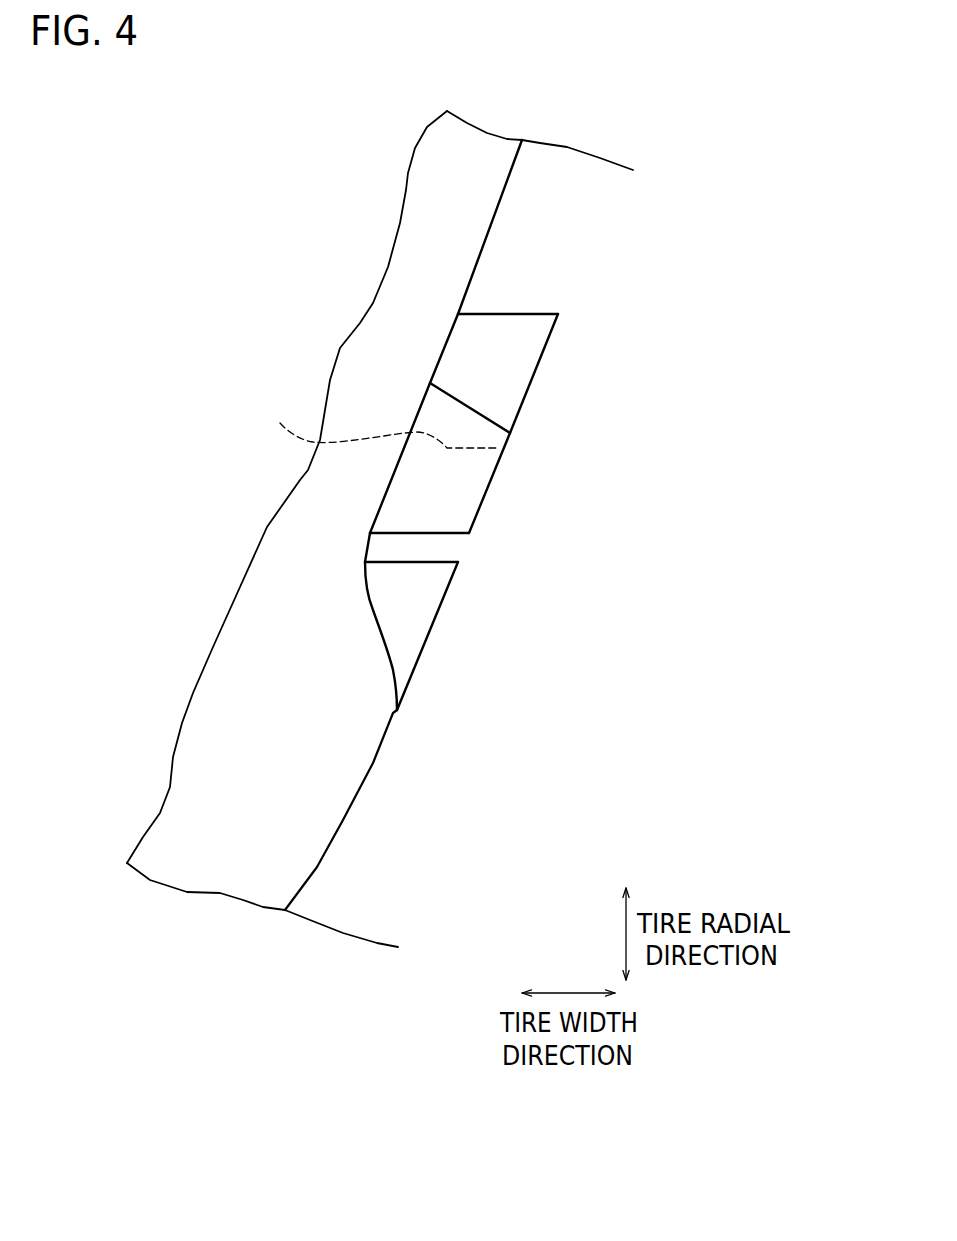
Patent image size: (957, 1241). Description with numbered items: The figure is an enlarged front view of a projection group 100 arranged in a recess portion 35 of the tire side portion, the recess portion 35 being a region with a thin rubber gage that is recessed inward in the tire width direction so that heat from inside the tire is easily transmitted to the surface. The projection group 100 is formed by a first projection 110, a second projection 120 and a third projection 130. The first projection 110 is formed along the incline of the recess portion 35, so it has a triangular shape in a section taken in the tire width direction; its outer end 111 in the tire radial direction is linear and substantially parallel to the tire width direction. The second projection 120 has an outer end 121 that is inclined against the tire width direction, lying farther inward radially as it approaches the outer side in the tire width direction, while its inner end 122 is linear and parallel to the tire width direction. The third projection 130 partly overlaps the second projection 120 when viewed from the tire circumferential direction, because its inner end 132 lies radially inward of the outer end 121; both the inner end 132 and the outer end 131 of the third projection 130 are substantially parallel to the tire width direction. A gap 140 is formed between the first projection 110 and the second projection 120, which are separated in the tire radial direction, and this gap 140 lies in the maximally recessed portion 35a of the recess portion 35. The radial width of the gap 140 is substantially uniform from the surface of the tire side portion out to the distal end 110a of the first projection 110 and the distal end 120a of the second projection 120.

The projection group 100 is at (602, 307).
The outer end 131 is at (500, 312).
The third projection 130 is at (508, 370).
The outer end 121 is at (488, 420).
The inner end 132 is at (371, 419).
The second projection 120 is at (458, 488).
The distal end 120a is at (470, 533).
The inner end 122 is at (423, 533).
The gap 140 is at (448, 550).
The distal end 110a is at (458, 562).
The first projection 110 is at (412, 607).
The outer end 111 is at (391, 564).
The maximally recessed portion 35a is at (355, 548).
The recess portion 35 is at (367, 587).